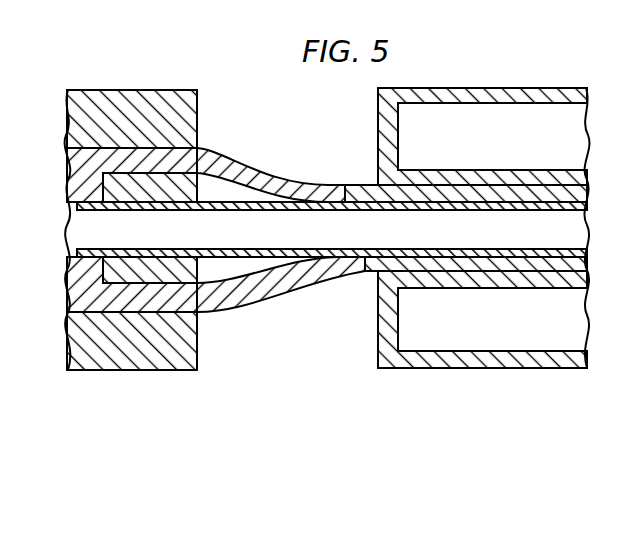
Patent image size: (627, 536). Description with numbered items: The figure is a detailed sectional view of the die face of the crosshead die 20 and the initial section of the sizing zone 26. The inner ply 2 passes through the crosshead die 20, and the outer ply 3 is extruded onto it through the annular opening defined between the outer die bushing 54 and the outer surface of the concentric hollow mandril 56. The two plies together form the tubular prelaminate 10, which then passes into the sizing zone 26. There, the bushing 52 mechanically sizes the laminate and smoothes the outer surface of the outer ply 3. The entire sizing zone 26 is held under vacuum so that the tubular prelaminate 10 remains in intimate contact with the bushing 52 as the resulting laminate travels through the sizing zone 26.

The inner ply 2 is at (250, 208).
The outer ply 3 is at (275, 175).
The tubular prelaminate 10 is at (336, 163).
The crosshead die 20 is at (212, 321).
The sizing zone 26 is at (480, 80).
The bushing 52 is at (457, 184).
The outer die bushing 54 is at (198, 108).
The concentric hollow mandril 56 is at (184, 190).